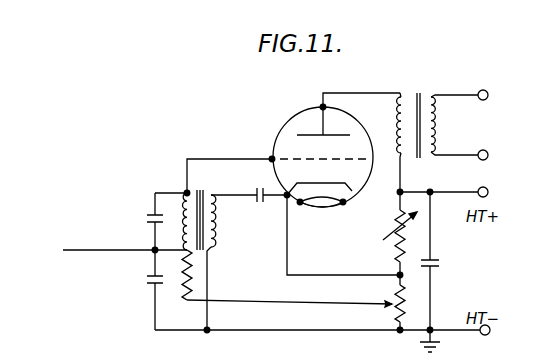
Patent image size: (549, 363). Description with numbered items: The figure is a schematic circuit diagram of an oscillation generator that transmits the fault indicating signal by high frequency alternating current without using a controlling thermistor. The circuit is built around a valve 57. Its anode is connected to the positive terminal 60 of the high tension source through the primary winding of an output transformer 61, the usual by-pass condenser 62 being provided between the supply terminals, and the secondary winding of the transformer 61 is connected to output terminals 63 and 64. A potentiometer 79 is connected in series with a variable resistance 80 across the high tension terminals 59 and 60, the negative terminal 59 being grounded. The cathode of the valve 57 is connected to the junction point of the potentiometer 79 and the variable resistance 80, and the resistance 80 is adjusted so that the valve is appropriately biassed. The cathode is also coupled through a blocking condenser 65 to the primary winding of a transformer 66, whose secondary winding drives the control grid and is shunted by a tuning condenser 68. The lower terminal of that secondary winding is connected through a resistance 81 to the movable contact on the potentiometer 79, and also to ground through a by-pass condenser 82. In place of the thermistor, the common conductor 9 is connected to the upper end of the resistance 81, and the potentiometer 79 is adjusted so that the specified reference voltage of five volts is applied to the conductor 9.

The common conductor 9 is at (83, 250).
The valve 57 is at (334, 150).
The negative terminal 59 is at (496, 332).
The positive terminal 60 is at (455, 194).
The output transformer 61 is at (417, 93).
The by-pass condenser 62 is at (438, 264).
The output terminal 63 is at (494, 97).
The output terminal 64 is at (494, 157).
The blocking condenser 65 is at (265, 185).
The transformer 66 is at (201, 195).
The tuning condenser 68 is at (140, 219).
The potentiometer 79 is at (411, 302).
The variable resistance 80 is at (405, 233).
The resistance 81 is at (190, 270).
The by-pass condenser 82 is at (140, 280).